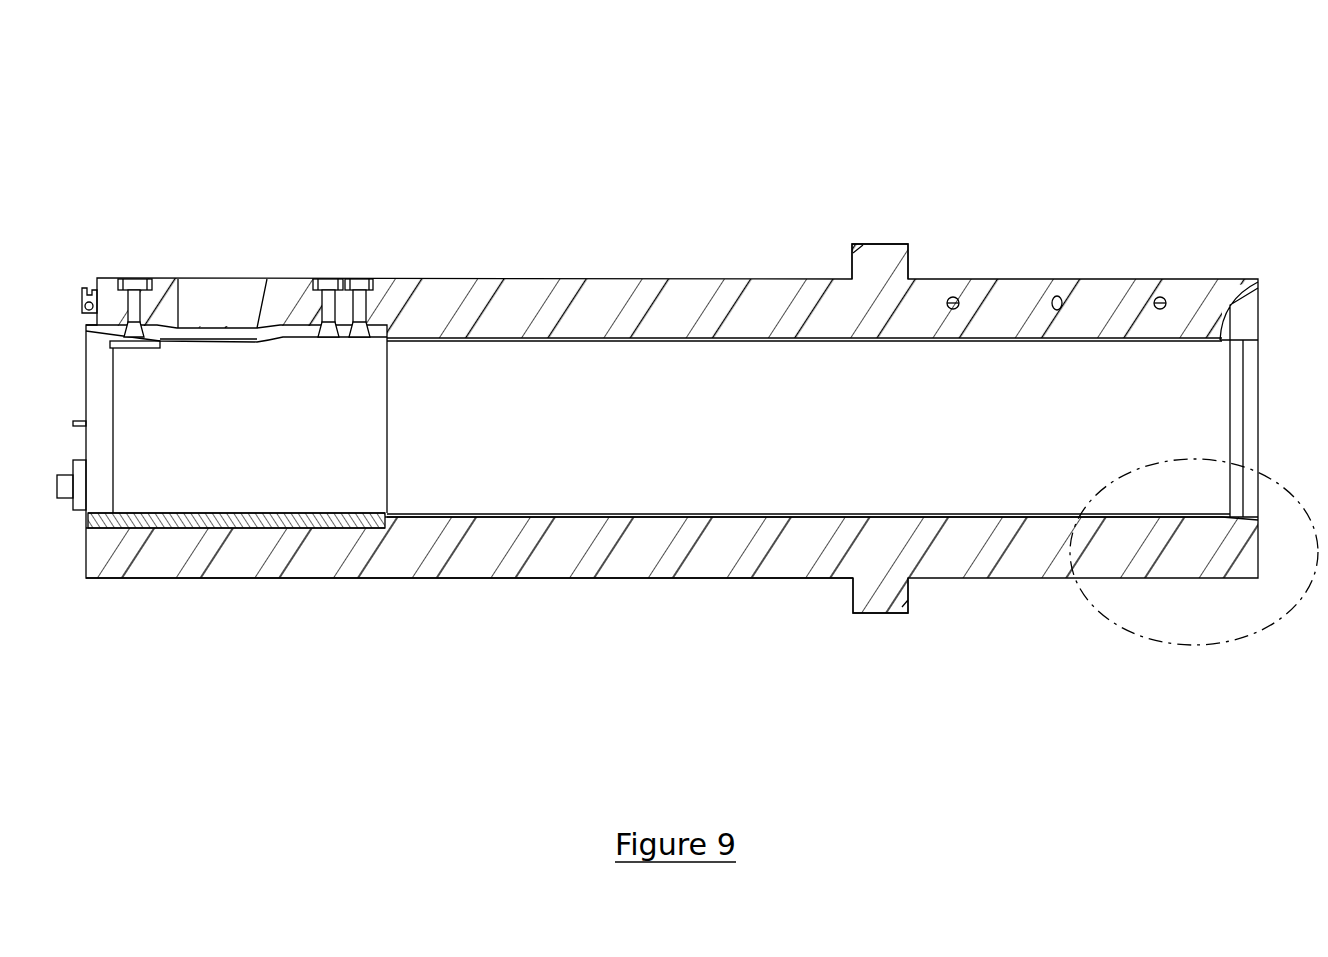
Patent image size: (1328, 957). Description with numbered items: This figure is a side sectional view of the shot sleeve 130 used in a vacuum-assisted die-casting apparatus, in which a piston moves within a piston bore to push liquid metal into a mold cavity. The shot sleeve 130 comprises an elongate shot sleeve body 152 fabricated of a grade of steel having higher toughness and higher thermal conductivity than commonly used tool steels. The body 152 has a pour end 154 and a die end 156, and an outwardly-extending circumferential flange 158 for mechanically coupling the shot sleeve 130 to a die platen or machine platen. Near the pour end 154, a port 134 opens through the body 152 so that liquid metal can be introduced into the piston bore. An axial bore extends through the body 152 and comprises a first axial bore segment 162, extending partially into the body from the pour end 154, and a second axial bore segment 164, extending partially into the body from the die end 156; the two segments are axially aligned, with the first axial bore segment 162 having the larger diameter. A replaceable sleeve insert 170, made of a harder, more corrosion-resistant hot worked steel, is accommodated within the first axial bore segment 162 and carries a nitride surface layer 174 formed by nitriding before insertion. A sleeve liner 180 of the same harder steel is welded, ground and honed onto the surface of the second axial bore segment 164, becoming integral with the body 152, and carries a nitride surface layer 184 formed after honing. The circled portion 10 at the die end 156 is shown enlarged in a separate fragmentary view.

The shot sleeve 130 is at (1169, 90).
The port 134 is at (228, 264).
The shot sleeve body 152 is at (597, 290).
The circumferential flange 158 is at (886, 250).
The die end 156 is at (1284, 317).
The pour end 154 is at (52, 347).
The nitride surface layer 174 is at (273, 508).
The sleeve insert 170 is at (242, 528).
The first axial bore segment 162 is at (336, 536).
The sleeve liner 180 is at (733, 520).
The nitride surface layer 184 is at (812, 509).
The second axial bore segment 164 is at (970, 526).
The portion of the shot sleeve 10 is at (1272, 630).